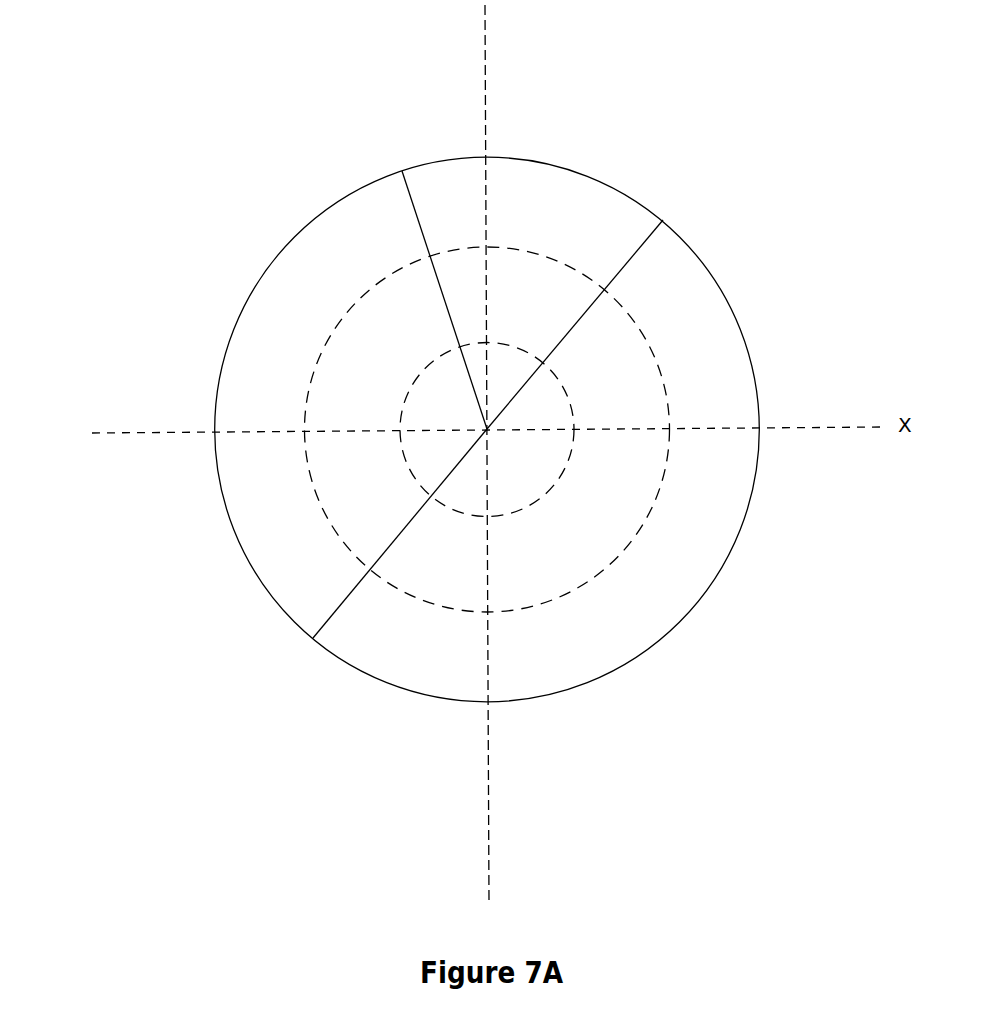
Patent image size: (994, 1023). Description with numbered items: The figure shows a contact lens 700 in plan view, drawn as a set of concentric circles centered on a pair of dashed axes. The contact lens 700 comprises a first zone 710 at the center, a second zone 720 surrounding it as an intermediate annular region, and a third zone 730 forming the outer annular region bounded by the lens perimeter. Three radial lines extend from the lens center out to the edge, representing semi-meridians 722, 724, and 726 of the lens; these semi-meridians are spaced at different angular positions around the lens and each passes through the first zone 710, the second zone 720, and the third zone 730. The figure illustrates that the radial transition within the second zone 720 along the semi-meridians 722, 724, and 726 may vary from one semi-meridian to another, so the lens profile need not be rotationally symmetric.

The contact lens 700 is at (393, 429).
The first zone 710 is at (487, 430).
The second zone 720 is at (487, 429).
The third zone 730 is at (487, 429).
The semi-meridian 722 is at (575, 332).
The semi-meridian 724 is at (443, 323).
The semi-meridian 726 is at (409, 535).